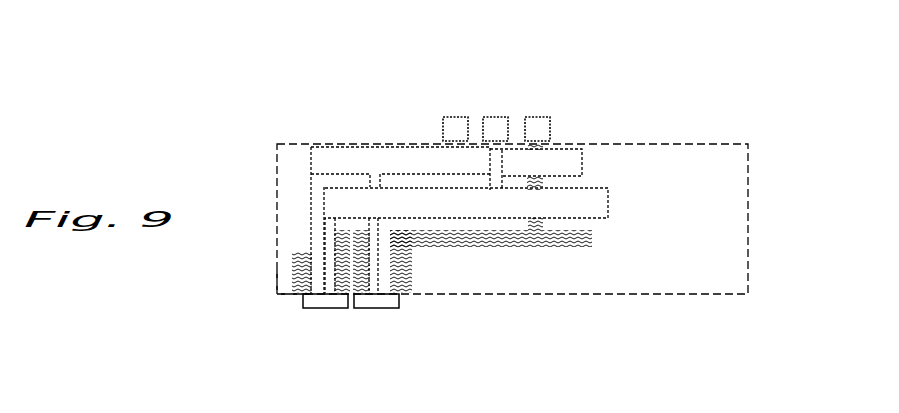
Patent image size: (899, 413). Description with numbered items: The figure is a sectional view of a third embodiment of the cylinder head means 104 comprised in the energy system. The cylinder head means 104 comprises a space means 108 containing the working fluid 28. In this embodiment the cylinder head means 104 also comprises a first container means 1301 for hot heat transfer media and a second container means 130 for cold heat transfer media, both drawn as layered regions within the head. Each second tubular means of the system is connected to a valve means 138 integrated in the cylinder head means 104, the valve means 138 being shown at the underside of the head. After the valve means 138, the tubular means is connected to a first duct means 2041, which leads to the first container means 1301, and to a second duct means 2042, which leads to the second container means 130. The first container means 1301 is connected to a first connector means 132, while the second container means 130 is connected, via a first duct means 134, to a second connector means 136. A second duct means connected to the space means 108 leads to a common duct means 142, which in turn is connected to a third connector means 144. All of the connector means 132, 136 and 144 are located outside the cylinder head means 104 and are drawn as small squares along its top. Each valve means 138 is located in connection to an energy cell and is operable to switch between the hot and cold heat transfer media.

The cylinder head means 104 is at (748, 282).
The first container means 1301 is at (332, 162).
The second container means 130 is at (607, 203).
The first duct means 134 is at (497, 165).
The first connector means 132 is at (447, 128).
The second connector means 136 is at (489, 126).
The third connector means 144 is at (540, 126).
The common duct means 142 is at (540, 225).
The first duct means 2041 is at (318, 187).
The second duct means 2042 is at (385, 265).
The space means 108 is at (298, 260).
The working fluid 28 is at (292, 278).
The valve means 138 is at (325, 308).